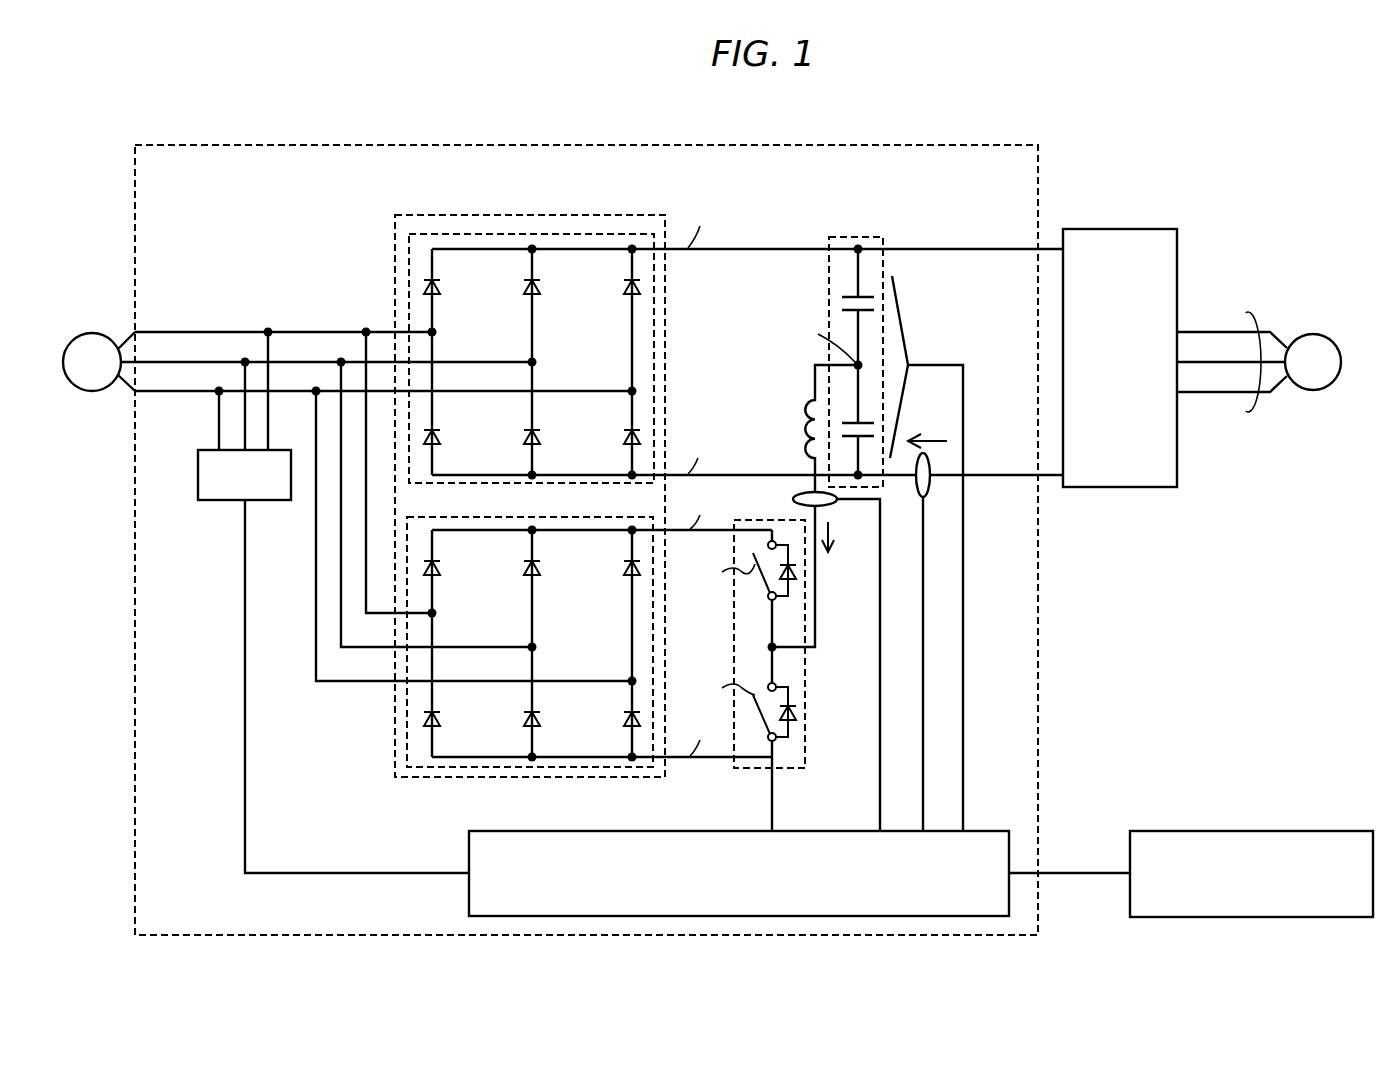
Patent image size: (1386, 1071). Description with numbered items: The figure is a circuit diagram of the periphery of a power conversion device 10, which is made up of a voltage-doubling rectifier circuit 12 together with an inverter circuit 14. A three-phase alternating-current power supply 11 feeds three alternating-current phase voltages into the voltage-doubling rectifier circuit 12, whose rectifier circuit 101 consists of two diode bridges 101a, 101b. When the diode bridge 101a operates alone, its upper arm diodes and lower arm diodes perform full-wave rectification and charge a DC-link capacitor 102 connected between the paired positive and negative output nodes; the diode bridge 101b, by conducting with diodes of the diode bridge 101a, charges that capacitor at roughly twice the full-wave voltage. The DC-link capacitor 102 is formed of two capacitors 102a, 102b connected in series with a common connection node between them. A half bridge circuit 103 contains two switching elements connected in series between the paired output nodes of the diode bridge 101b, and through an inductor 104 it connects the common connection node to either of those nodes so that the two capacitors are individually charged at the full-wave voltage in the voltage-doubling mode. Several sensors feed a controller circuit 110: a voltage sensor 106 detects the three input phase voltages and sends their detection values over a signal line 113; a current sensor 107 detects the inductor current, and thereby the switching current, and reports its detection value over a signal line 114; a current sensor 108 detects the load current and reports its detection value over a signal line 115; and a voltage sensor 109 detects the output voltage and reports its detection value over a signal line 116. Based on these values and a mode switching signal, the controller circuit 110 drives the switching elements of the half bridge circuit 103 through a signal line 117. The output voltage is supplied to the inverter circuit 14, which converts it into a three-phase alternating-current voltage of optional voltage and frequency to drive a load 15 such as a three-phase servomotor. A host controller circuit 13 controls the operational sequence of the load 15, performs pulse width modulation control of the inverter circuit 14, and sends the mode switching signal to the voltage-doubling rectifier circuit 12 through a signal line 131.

The power conversion device 10 is at (1203, 157).
The three-phase alternating-current power supply 11 is at (93, 332).
The voltage-doubling rectifier circuit 12 is at (252, 145).
The host controller circuit 13 is at (1245, 831).
The inverter circuit 14 is at (1123, 229).
The load 15 is at (1314, 334).
The rectifier circuit 101 is at (408, 215).
The diode bridge 101a is at (408, 260).
The diode bridge 101b is at (407, 742).
The DC-link capacitor 102 is at (867, 237).
The capacitor 102a is at (842, 300).
The capacitor 102b is at (845, 420).
The half bridge circuit 103 is at (805, 702).
The inductor 104 is at (800, 432).
The voltage sensor 106 is at (200, 450).
The current sensor 107 is at (794, 499).
The current sensor 108 is at (928, 490).
The voltage sensor 109 is at (898, 315).
The controller circuit 110 is at (497, 831).
The signal line 113 is at (243, 601).
The signal line 114 is at (880, 667).
The signal line 115 is at (925, 633).
The signal line 116 is at (965, 595).
The signal line 117 is at (775, 795).
The signal line 131 is at (1087, 870).